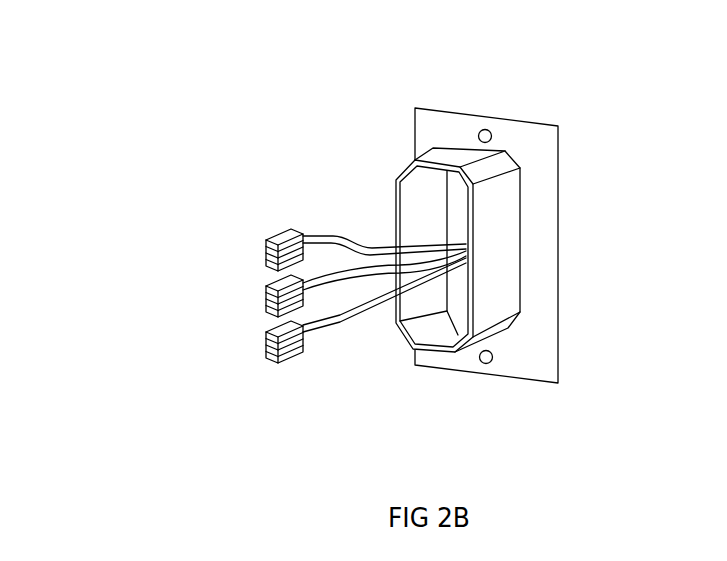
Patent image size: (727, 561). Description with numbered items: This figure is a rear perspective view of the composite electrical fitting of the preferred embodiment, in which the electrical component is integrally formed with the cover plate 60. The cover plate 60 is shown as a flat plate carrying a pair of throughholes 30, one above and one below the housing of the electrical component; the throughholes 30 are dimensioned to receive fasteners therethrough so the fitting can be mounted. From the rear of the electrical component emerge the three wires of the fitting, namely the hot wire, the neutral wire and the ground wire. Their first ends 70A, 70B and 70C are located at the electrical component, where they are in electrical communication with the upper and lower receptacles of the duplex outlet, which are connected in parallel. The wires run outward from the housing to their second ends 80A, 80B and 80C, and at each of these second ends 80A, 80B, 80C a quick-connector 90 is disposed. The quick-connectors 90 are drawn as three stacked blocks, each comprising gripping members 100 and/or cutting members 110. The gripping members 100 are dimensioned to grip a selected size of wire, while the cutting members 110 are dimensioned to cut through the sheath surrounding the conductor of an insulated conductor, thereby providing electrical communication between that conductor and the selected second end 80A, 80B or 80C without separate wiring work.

The throughholes 30 is at (477, 129).
The cover plate 60 is at (537, 353).
The first end of hot wire 70A is at (466, 243).
The first end of neutral wire 70B is at (459, 242).
The first end of ground wire 70C is at (462, 241).
The second end of hot wire 80A is at (312, 230).
The second end of neutral wire 80B is at (313, 280).
The second end of ground wire 80C is at (313, 322).
The quick-connectors 90 is at (266, 241).
The gripping members 100 is at (177, 312).
The cutting members 110 is at (267, 257).